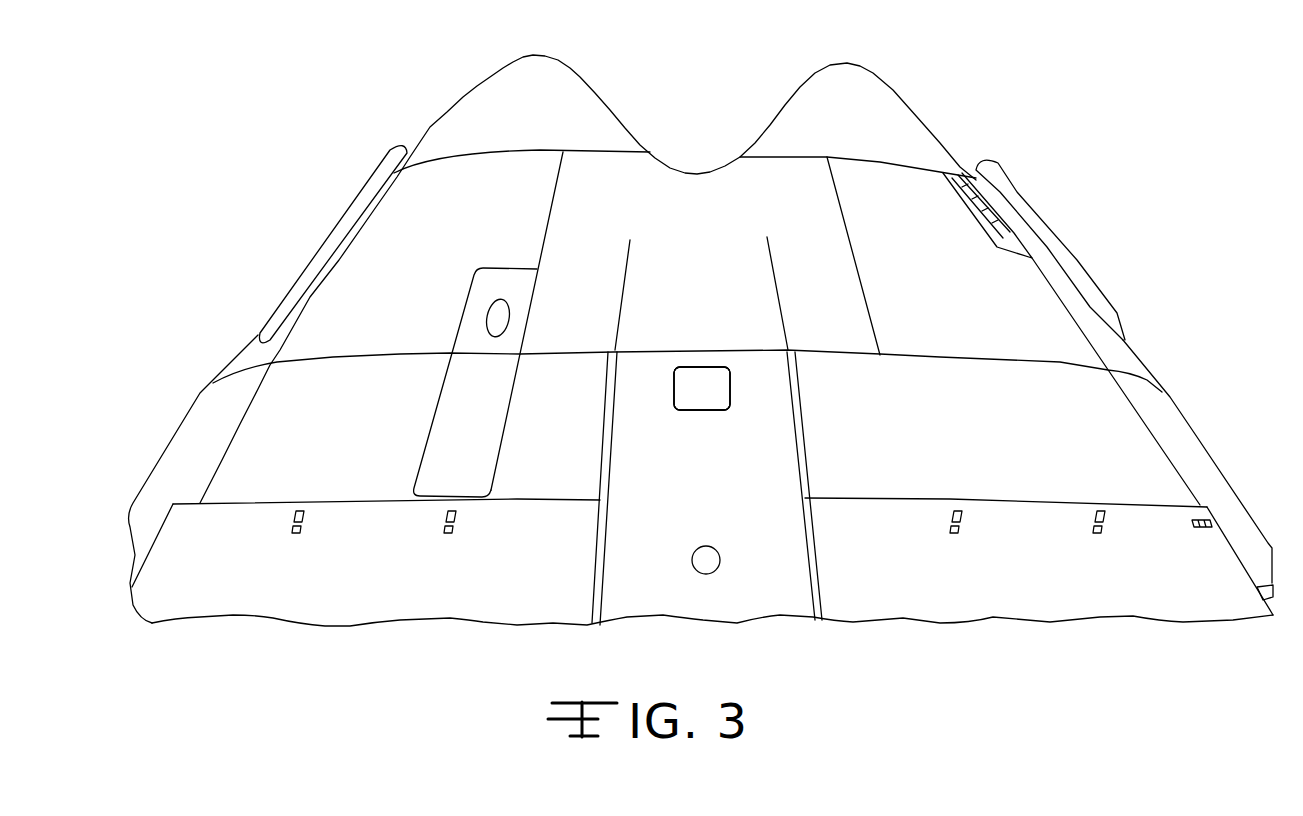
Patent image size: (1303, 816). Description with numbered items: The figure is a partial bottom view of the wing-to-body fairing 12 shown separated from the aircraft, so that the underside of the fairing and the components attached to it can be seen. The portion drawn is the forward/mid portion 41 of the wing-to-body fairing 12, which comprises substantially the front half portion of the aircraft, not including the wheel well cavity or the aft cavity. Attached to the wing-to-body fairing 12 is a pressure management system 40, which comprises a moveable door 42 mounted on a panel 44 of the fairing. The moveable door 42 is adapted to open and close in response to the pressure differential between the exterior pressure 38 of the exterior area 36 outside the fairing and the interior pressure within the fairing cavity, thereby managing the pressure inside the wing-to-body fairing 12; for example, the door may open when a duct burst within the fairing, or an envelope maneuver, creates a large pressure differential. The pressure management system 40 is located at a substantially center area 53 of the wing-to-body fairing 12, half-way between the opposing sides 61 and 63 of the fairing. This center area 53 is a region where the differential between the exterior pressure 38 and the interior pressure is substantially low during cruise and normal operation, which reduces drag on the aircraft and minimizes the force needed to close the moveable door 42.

The wing-to-body fairing 12 is at (1198, 370).
The exterior area 36 is at (246, 250).
The exterior pressure 38 is at (180, 283).
The pressure management system 40 is at (703, 388).
The forward/mid portion 41 is at (1197, 437).
The moveable door 42 is at (703, 388).
The panel 44 is at (757, 550).
The center area 53 is at (687, 388).
The opposing side 61 is at (200, 408).
The opposing side 63 is at (1120, 323).